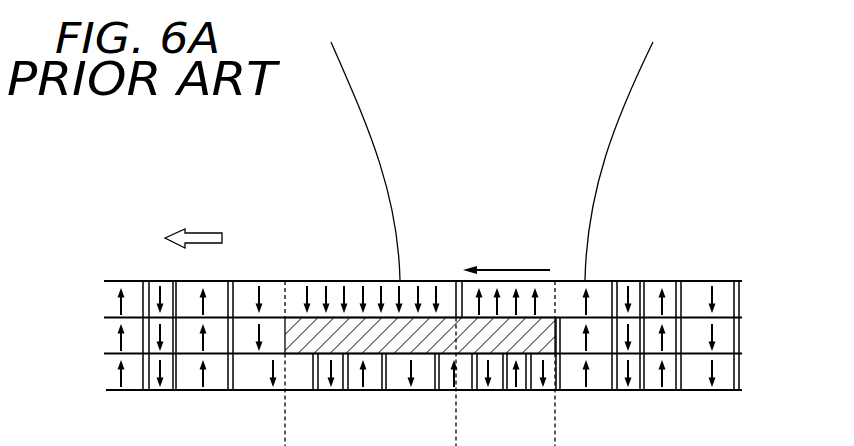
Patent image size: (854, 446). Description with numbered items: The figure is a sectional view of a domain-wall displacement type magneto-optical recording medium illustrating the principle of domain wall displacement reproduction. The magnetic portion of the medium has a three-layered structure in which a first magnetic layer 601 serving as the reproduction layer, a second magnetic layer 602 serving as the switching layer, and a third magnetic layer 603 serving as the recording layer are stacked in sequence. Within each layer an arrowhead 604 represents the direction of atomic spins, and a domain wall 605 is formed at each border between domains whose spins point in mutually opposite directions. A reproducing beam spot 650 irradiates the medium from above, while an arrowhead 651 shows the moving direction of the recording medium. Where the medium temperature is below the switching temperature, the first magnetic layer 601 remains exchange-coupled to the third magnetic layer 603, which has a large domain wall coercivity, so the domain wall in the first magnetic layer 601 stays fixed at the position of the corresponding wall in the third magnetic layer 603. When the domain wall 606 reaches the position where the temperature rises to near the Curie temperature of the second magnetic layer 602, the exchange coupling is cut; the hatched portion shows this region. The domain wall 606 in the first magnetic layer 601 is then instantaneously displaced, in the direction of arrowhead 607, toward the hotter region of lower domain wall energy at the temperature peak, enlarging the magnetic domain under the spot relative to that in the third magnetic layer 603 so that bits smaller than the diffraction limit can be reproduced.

The first magnetic layer 601 is at (743, 300).
The second magnetic layer 602 is at (743, 336).
The third magnetic layer 603 is at (743, 373).
The arrowhead 604 is at (712, 292).
The domain wall 605 is at (683, 292).
The domain wall 606 is at (561, 288).
The arrowhead 607 is at (527, 267).
The reproducing beam spot 650 is at (607, 113).
The arrowhead 651 is at (210, 233).